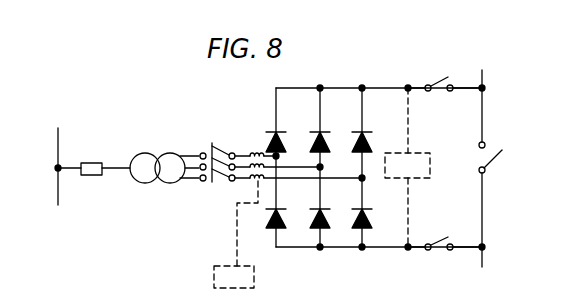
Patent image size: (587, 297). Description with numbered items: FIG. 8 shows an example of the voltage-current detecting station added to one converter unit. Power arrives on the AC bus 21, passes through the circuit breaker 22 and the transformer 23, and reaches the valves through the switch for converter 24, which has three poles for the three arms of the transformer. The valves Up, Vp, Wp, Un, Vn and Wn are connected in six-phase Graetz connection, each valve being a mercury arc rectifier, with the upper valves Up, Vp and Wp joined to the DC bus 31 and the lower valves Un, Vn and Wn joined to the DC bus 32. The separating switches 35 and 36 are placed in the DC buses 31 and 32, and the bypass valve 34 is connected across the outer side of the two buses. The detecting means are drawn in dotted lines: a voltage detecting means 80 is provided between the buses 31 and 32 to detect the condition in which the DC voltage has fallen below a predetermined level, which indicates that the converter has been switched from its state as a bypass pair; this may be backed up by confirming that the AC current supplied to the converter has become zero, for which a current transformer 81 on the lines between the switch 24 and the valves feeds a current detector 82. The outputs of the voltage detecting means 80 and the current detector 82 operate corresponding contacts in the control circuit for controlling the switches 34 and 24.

The AC bus 21 is at (59, 147).
The circuit breaker 22 is at (98, 163).
The transformer 23 is at (178, 153).
The switch for converter 24 is at (219, 182).
The current transformer 81 is at (257, 150).
The DC bus 31 is at (328, 88).
The DC bus 32 is at (377, 248).
The bypass valve 34 is at (502, 151).
The separating switch 35 is at (437, 92).
The separating switch 36 is at (438, 251).
The voltage detecting means 80 is at (430, 163).
The current detector 82 is at (254, 270).
The valve Up is at (283, 141).
The valve Vp is at (327, 141).
The valve Wp is at (369, 141).
The valve Un is at (269, 218).
The valve Vn is at (313, 218).
The valve Wn is at (355, 218).